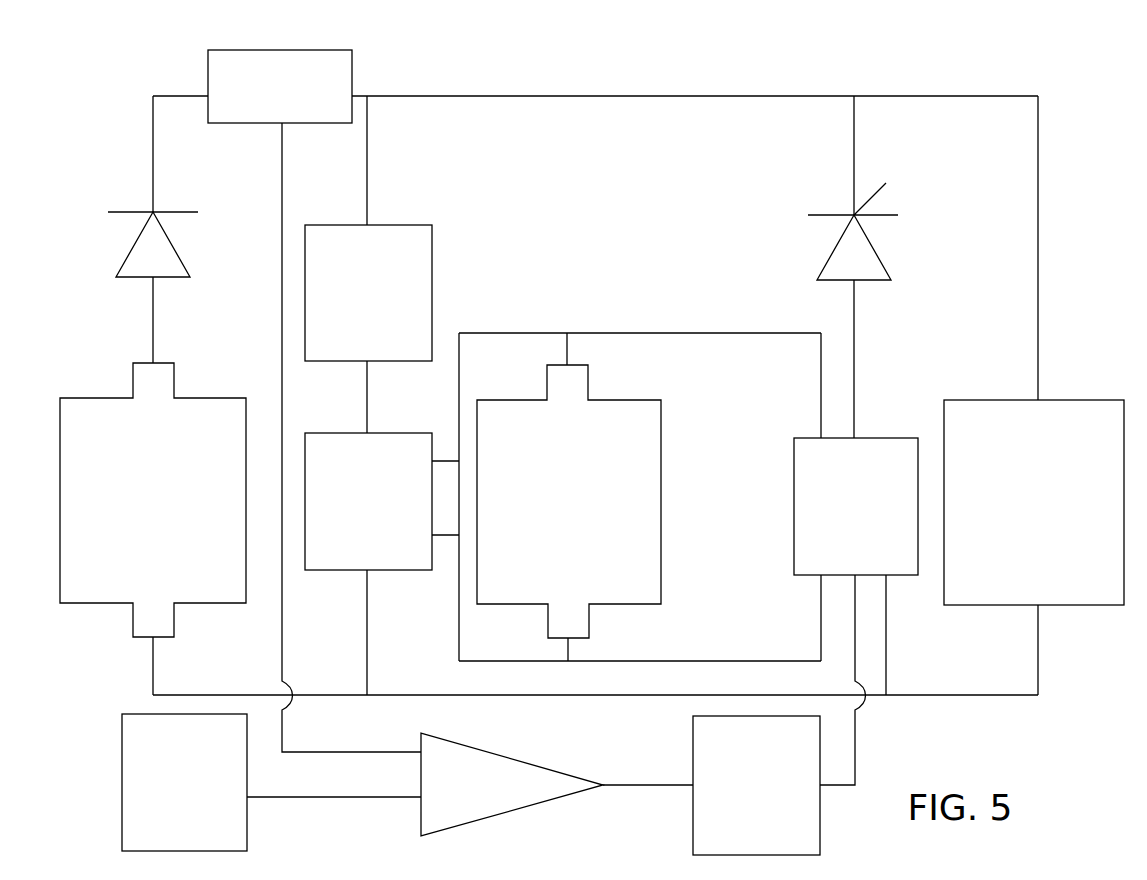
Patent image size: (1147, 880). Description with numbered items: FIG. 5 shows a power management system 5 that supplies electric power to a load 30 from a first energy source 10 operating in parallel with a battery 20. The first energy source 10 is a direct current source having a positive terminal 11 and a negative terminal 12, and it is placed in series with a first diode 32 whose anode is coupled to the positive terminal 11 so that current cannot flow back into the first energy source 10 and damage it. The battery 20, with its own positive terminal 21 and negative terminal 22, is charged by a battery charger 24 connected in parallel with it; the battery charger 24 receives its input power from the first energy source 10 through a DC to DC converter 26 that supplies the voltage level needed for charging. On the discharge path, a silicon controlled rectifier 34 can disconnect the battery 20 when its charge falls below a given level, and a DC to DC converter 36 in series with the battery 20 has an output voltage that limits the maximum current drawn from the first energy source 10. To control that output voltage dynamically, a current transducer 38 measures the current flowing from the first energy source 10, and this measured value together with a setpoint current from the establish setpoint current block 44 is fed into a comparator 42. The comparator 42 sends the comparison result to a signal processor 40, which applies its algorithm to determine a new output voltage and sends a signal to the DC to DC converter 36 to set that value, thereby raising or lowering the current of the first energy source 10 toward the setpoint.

The power management system 5 is at (610, 70).
The first energy source 10 is at (98, 398).
The positive terminal 11 is at (166, 383).
The negative terminal 12 is at (166, 615).
The battery 20 is at (661, 508).
The positive terminal 21 is at (580, 386).
The negative terminal 22 is at (580, 617).
The battery charger 24 is at (360, 571).
The DC to DC converter 26 is at (358, 225).
The load 30 is at (1008, 400).
The first diode 32 is at (178, 252).
The silicon controlled rectifier 34 is at (877, 250).
The DC to DC converter 36 is at (905, 576).
The current transducer 38 is at (232, 124).
The signal processor 40 is at (693, 742).
The comparator 42 is at (510, 757).
The establish setpoint current 44 is at (247, 829).